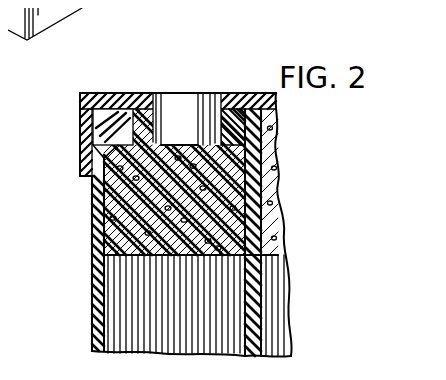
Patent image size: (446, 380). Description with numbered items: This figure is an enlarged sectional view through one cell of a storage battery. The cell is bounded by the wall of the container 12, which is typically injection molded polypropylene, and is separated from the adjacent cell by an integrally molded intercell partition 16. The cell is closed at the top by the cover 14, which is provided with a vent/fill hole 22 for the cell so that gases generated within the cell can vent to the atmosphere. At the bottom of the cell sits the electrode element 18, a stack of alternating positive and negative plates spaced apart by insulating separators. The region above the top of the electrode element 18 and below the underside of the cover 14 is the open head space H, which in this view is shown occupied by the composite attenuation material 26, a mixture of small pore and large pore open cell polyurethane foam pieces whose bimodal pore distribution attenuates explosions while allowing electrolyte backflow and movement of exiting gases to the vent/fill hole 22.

The container 12 is at (86, 266).
The cover 14 is at (229, 86).
The intercell partition 16 is at (258, 278).
The electrode element 18 is at (127, 323).
The vent/fill hole 22 is at (192, 98).
The composite attenuation material 26 is at (100, 191).
The open head space H is at (252, 177).